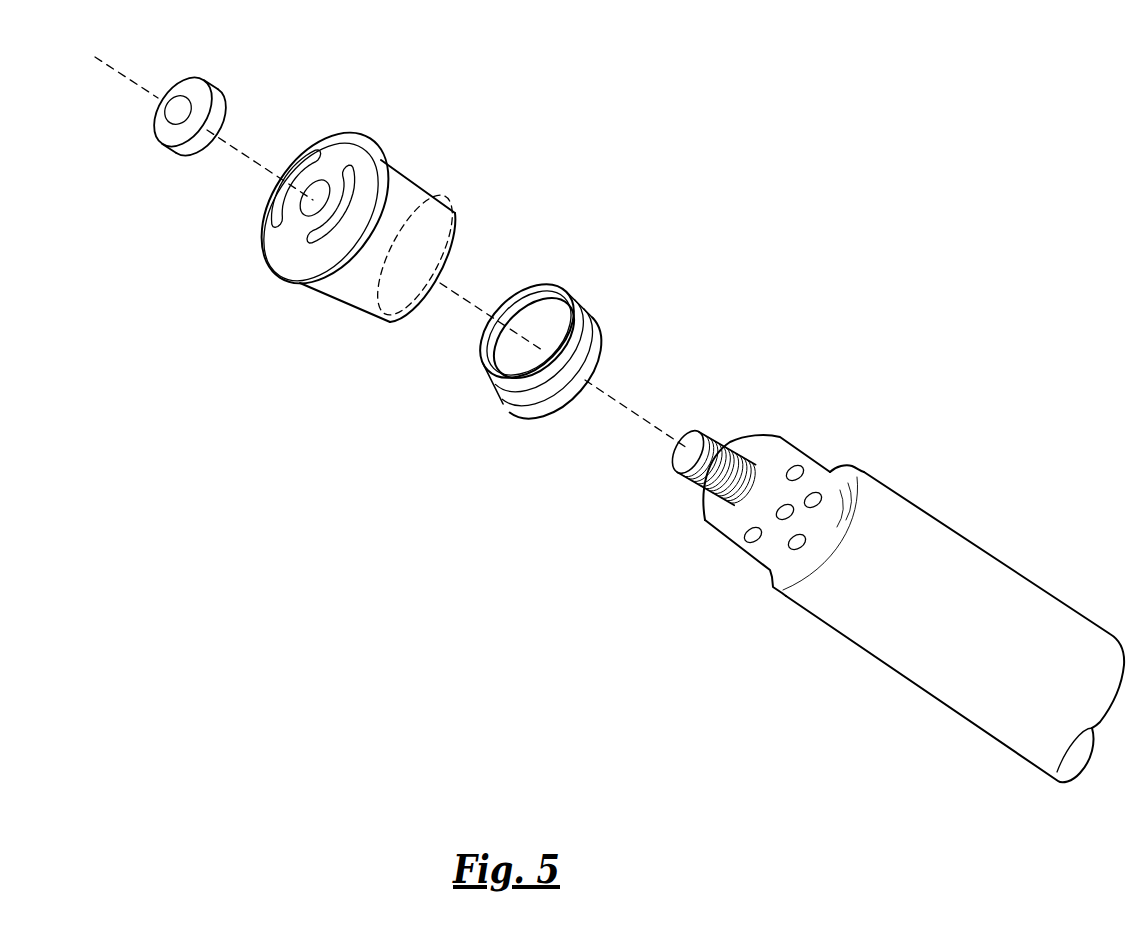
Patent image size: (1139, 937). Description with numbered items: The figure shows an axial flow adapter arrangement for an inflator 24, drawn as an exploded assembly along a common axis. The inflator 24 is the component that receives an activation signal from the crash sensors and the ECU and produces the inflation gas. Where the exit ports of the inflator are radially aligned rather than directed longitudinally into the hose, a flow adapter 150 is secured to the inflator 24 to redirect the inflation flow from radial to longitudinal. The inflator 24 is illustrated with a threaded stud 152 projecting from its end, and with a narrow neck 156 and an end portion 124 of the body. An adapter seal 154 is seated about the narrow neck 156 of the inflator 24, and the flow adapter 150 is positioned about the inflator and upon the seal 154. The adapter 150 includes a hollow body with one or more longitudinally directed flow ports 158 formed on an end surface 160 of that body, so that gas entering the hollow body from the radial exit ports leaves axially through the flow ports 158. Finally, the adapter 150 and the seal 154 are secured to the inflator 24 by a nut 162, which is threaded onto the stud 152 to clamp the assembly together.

The inflator 24 is at (955, 550).
The perforated end portion 124 is at (748, 557).
The flow adapter 150 is at (327, 210).
The threaded stud 152 is at (697, 487).
The adapter seal 154 is at (533, 422).
The narrow neck 156 is at (850, 470).
The flow ports 158 is at (308, 160).
The end surface 160 is at (282, 258).
The nut 162 is at (172, 143).